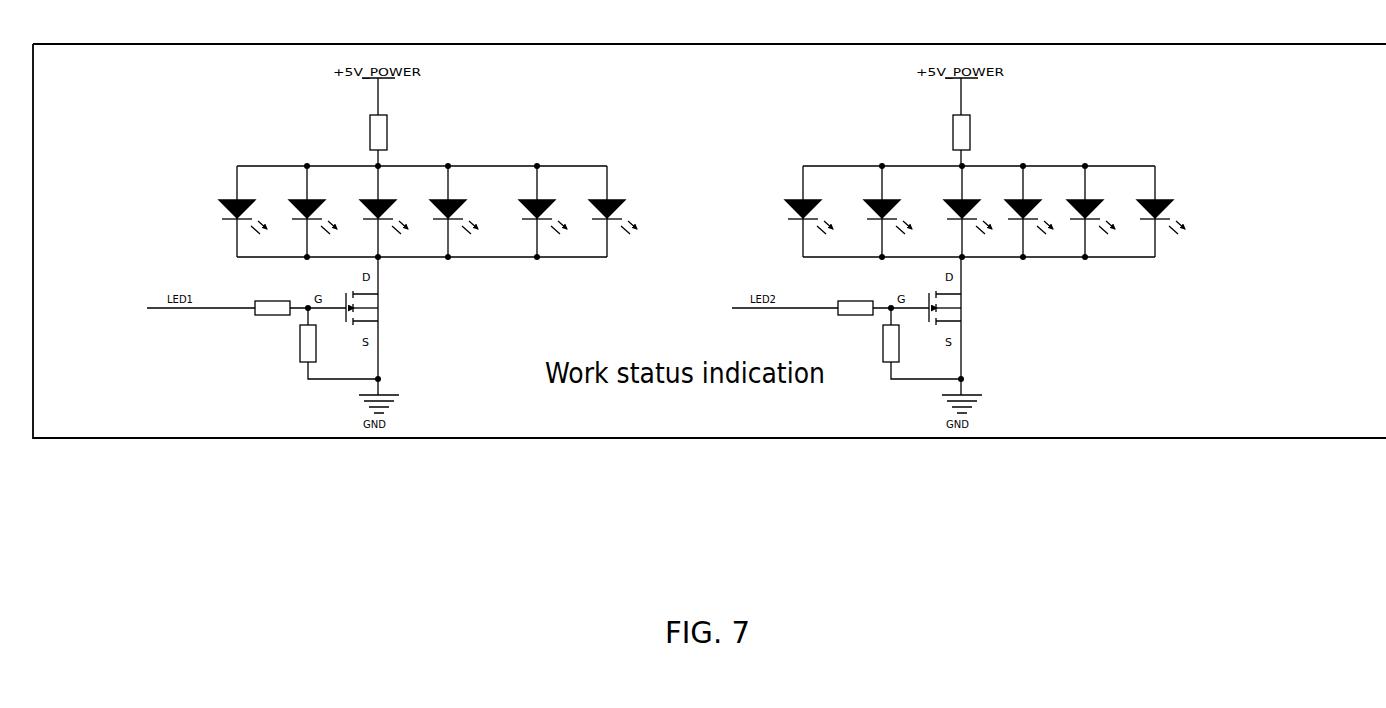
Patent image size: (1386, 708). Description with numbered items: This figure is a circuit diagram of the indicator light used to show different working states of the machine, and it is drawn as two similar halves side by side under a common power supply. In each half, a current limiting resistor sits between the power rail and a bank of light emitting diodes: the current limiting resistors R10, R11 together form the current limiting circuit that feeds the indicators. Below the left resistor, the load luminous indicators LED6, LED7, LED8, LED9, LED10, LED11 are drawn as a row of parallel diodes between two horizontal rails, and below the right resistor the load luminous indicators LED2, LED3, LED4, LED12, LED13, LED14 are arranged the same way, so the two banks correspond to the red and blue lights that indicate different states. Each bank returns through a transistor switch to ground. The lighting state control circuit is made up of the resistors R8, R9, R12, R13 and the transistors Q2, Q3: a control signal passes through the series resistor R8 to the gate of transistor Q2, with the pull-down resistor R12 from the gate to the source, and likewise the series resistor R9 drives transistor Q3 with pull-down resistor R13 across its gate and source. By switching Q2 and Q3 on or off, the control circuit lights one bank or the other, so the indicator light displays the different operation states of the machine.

The current limiting resistor R10 is at (393, 132).
The current limiting resistor R11 is at (976, 132).
The lighting state control resistor R8 is at (271, 310).
The lighting state control resistor R9 is at (854, 310).
The lighting state control resistor R12 is at (339, 343).
The lighting state control resistor R13 is at (922, 343).
The lighting state control transistor Q2 is at (387, 308).
The lighting state control transistor Q3 is at (970, 308).
The load luminous indicator LED6 is at (245, 211).
The load luminous indicator LED7 is at (315, 211).
The load luminous indicator LED8 is at (386, 211).
The load luminous indicator LED9 is at (456, 211).
The load luminous indicator LED10 is at (548, 211).
The load luminous indicator LED11 is at (618, 211).
The load luminous indicator LED2 is at (811, 211).
The load luminous indicator LED3 is at (890, 211).
The load luminous indicator LED4 is at (970, 211).
The load luminous indicator LED12 is at (1034, 211).
The load luminous indicator LED13 is at (1096, 211).
The load luminous indicator LED14 is at (1166, 211).